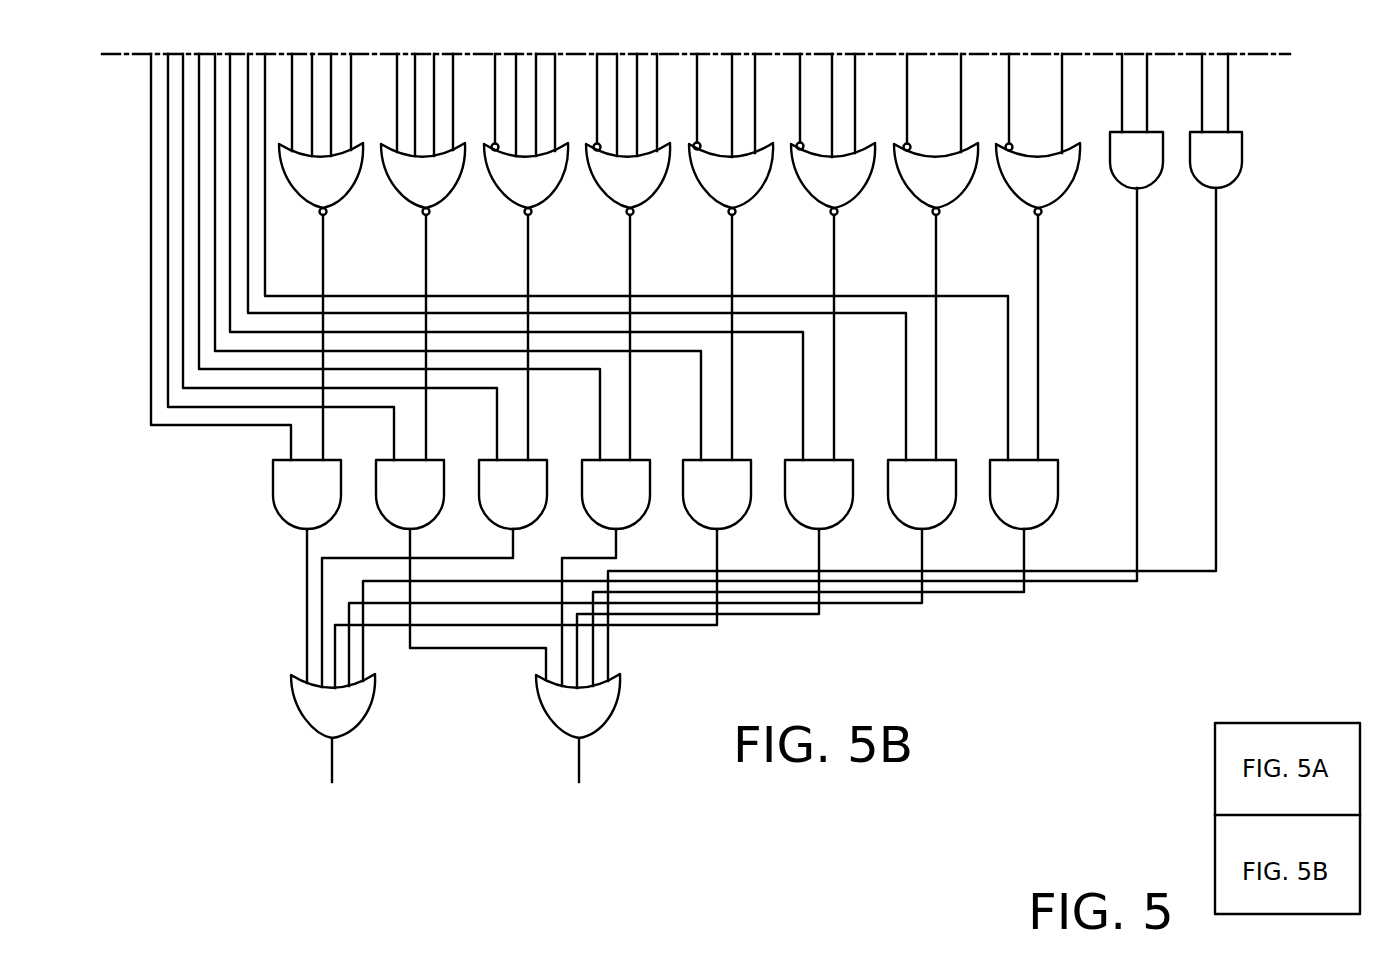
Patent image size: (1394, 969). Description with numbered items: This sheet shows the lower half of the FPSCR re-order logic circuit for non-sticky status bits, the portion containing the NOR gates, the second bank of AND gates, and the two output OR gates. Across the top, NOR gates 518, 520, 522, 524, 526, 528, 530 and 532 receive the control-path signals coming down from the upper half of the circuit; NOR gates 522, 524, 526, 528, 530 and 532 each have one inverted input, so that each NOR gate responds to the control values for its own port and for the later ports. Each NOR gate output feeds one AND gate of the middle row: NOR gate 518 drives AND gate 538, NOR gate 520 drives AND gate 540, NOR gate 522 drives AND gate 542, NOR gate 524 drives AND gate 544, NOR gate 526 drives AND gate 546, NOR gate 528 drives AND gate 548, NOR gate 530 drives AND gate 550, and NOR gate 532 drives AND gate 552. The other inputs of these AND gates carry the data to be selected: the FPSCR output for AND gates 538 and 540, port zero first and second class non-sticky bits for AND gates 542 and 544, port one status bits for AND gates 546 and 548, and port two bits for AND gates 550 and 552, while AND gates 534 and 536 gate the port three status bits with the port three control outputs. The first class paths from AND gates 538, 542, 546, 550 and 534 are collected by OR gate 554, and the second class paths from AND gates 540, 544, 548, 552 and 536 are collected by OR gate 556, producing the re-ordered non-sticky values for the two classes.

The NOR gate 518 is at (302, 197).
The NOR gate 520 is at (396, 195).
The NOR gate 522 is at (498, 194).
The NOR gate 524 is at (603, 195).
The NOR gate 526 is at (705, 196).
The NOR gate 528 is at (807, 194).
The NOR gate 530 is at (907, 194).
The NOR gate 532 is at (1012, 195).
The AND gate 534 is at (1123, 187).
The AND gate 536 is at (1202, 185).
The AND gate 538 is at (278, 502).
The AND gate 540 is at (382, 457).
The AND gate 542 is at (478, 463).
The AND gate 544 is at (582, 460).
The AND gate 546 is at (678, 460).
The AND gate 548 is at (780, 460).
The AND gate 550 is at (880, 460).
The AND gate 552 is at (982, 460).
The OR gate 554 is at (305, 727).
The OR gate 556 is at (545, 725).